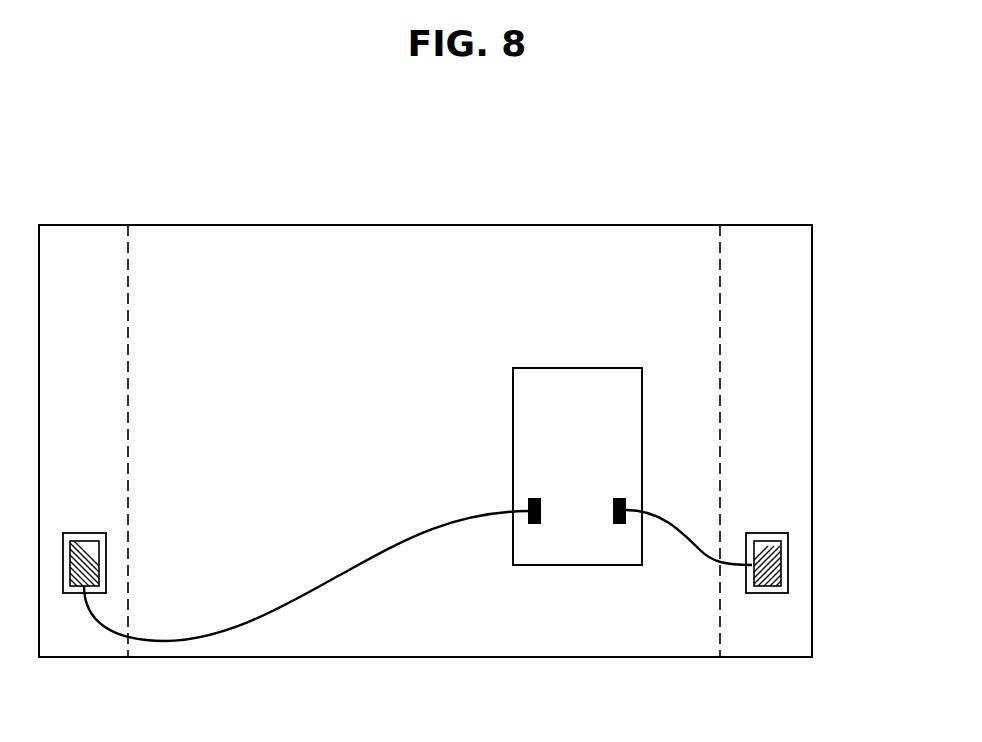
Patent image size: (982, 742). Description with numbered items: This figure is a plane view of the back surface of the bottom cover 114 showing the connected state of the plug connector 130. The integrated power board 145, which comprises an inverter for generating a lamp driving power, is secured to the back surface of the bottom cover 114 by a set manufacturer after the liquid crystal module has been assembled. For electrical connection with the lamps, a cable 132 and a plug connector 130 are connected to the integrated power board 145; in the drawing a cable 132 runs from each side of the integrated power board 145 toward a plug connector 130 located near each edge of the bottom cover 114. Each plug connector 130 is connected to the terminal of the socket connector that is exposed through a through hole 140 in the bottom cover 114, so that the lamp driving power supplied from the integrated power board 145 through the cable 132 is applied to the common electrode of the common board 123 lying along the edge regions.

The bottom cover 114 is at (513, 232).
The common board 123 is at (81, 235).
The plug connector 130 is at (98, 560).
The cable 132 is at (305, 590).
The through hole 140 is at (84, 533).
The integrated power board 145 is at (577, 368).